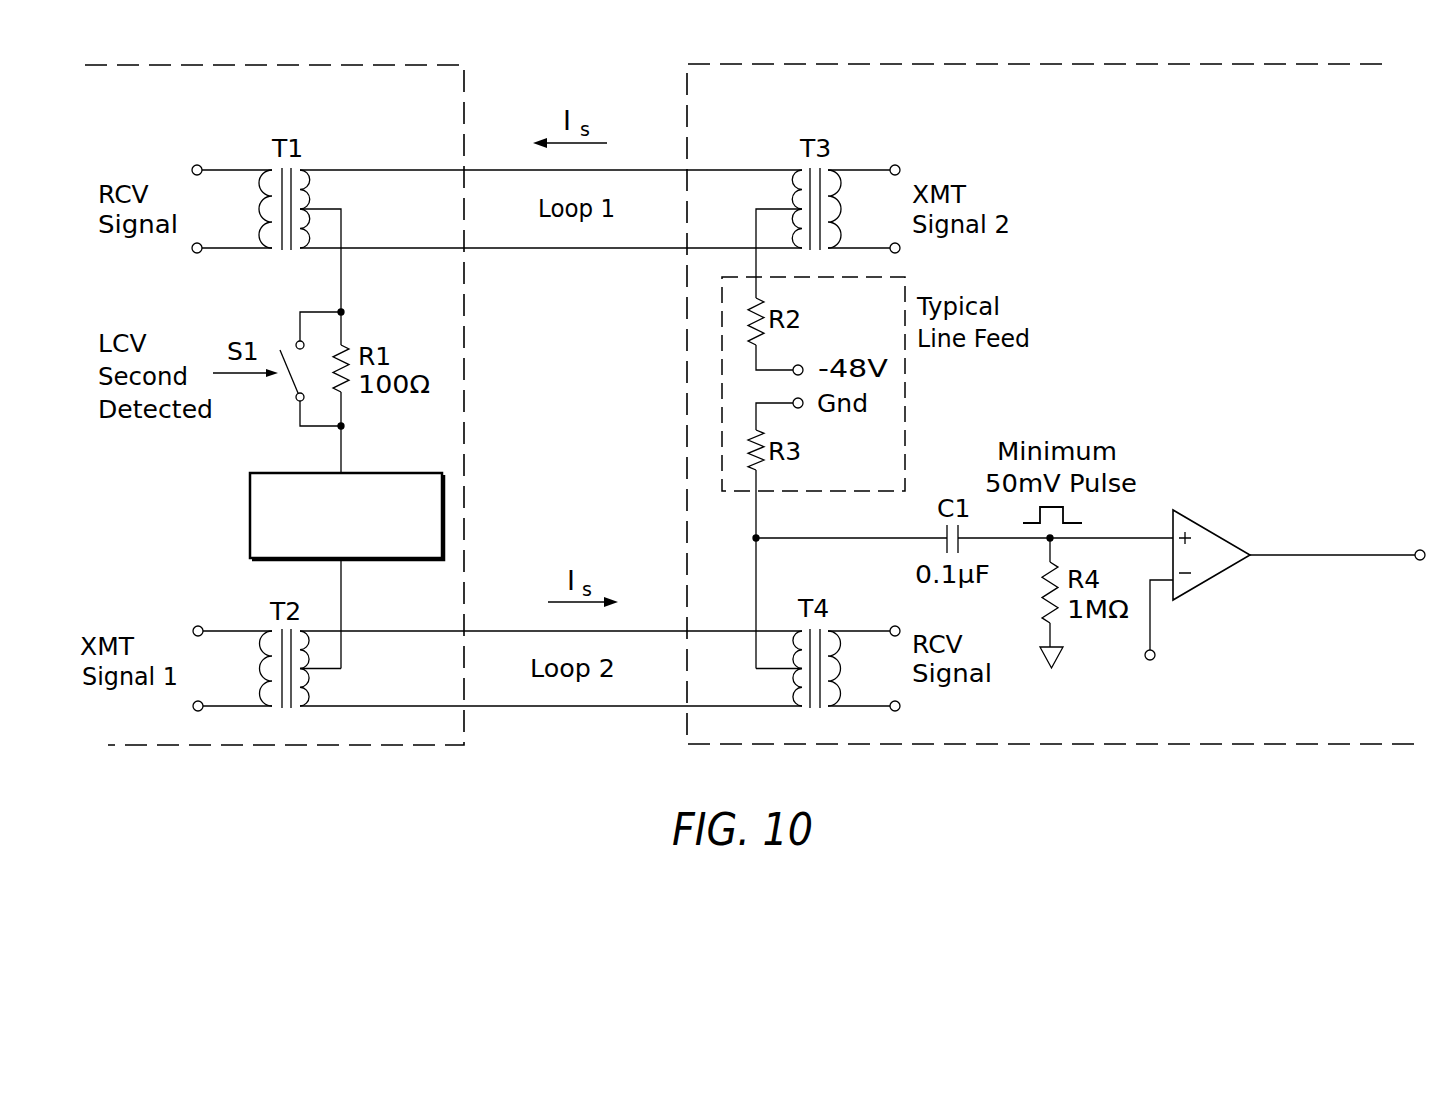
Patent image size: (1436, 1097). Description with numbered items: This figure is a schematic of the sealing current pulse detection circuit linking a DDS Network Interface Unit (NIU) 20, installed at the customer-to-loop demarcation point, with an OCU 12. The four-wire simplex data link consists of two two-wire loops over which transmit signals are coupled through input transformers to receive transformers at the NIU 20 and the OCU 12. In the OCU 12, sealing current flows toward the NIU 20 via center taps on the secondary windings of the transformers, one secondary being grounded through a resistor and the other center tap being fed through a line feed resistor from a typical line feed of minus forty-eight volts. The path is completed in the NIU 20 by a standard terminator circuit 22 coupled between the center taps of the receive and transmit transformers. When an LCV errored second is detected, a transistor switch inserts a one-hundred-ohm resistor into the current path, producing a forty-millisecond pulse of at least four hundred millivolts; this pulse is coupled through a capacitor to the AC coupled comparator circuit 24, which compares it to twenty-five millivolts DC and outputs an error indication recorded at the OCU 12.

The OCU 12 is at (1092, 102).
The DDS Network Interface Unit (NIU) 20 is at (300, 103).
The standard terminator circuit 22 is at (250, 523).
The AC coupled comparator circuit 24 is at (1193, 511).